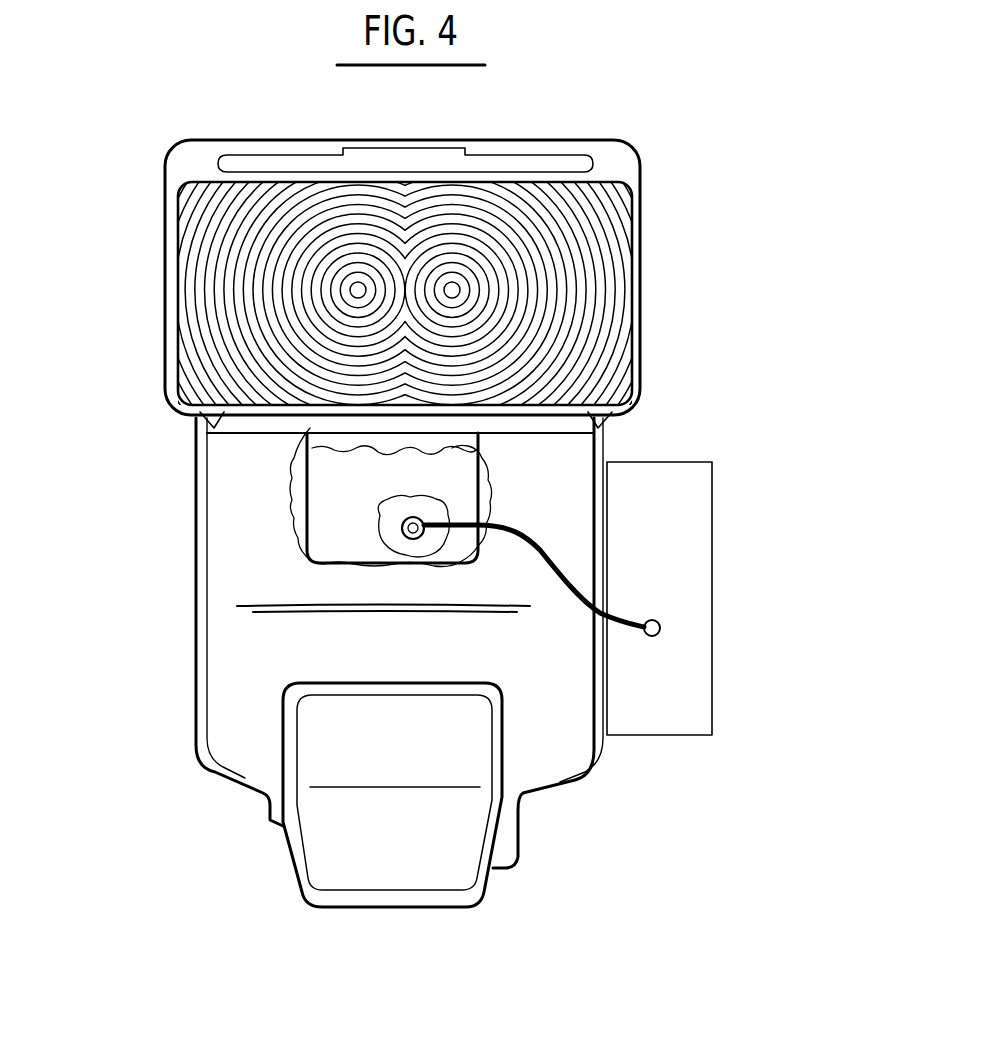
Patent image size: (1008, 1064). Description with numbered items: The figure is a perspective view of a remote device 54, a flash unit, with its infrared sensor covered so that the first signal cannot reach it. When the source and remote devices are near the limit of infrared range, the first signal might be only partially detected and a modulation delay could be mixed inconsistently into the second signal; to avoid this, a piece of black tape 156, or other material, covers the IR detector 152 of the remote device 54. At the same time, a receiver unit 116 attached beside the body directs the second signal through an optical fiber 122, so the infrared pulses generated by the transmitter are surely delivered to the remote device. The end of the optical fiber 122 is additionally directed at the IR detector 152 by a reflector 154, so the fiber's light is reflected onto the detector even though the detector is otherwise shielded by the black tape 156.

The remote device 54 is at (262, 645).
The receiver unit 116 is at (681, 530).
The optical fiber 122 is at (560, 550).
The IR detector 152 is at (378, 536).
The reflector 154 is at (385, 526).
The black tape 156 is at (292, 492).